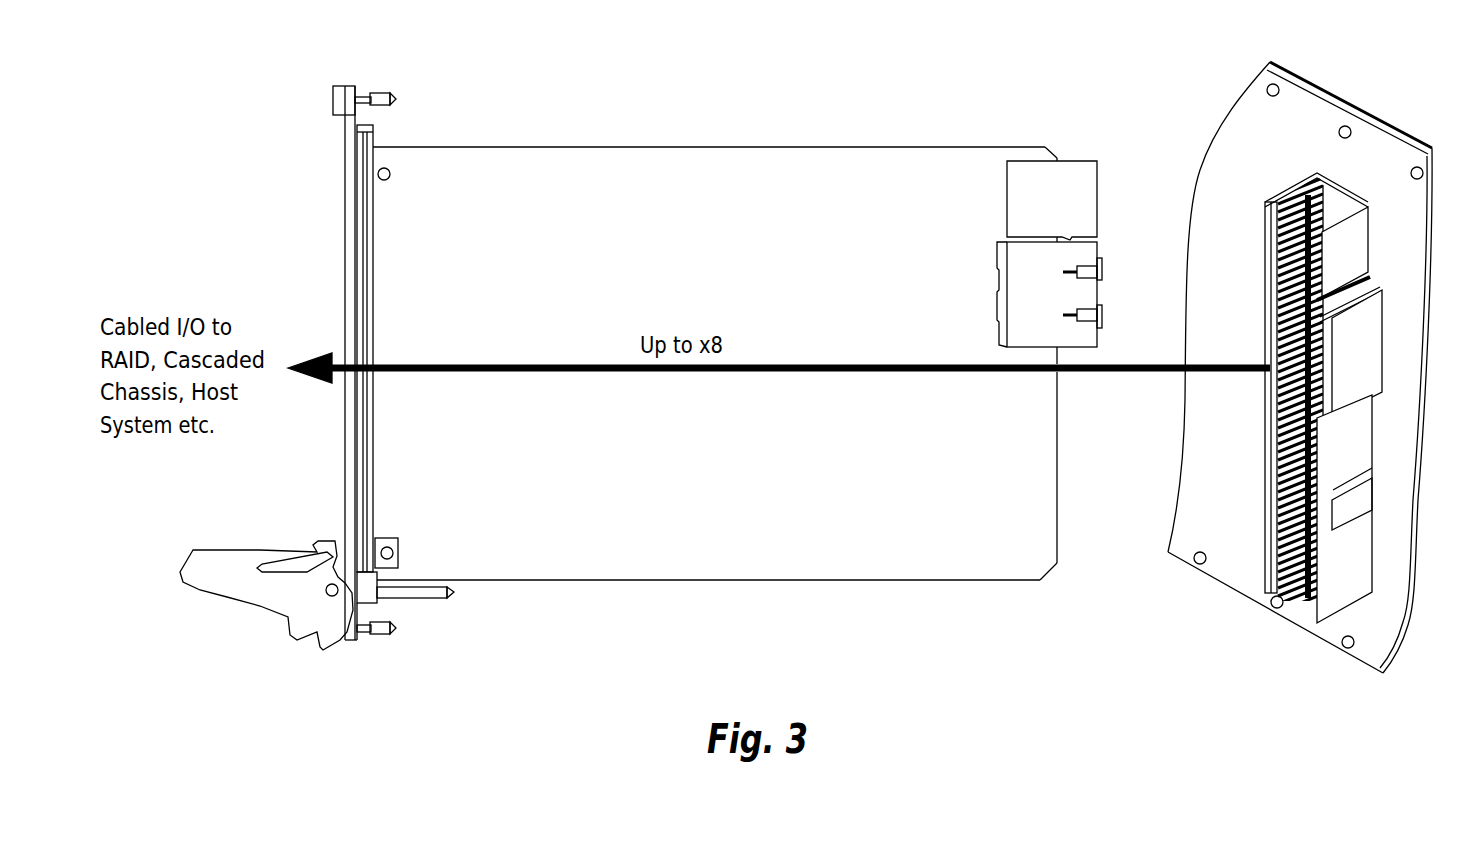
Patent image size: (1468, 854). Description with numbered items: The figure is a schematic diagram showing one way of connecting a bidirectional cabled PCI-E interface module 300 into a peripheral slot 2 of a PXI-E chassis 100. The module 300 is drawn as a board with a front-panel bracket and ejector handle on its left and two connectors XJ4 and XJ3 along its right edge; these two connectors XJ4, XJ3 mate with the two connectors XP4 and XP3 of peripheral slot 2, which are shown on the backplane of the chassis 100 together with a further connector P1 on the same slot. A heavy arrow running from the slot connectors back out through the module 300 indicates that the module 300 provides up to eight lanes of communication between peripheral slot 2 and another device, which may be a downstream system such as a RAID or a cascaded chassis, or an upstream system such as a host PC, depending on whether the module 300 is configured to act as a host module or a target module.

The bidirectional cabled PCI-E interface module 300 is at (635, 177).
The PXI-E chassis 100 is at (1230, 117).
The peripheral slot 2 is at (1305, 600).
The connector XJ4 is at (1022, 200).
The connector XJ3 is at (1024, 294).
The connector XP4 is at (1285, 252).
The connector XP3 is at (1292, 347).
The backplane connector P1 is at (1297, 509).